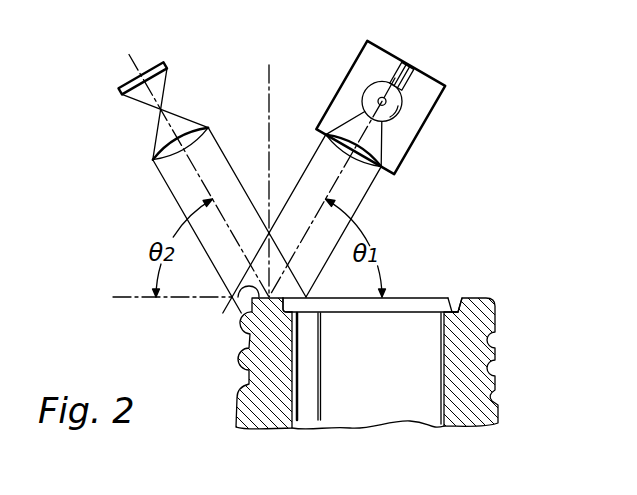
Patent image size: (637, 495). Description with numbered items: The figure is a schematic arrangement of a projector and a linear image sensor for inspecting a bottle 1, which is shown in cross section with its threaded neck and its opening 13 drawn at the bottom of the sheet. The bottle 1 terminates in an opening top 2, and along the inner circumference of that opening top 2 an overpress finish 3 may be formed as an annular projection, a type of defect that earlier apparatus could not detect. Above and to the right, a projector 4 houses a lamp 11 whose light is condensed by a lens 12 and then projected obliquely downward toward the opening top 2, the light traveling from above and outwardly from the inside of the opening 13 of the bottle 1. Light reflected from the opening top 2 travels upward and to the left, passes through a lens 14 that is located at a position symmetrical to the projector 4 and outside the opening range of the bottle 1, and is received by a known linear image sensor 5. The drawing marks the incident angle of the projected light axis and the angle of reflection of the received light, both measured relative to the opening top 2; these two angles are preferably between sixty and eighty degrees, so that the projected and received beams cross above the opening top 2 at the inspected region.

The bottle 1 is at (498, 409).
The opening top 2 is at (228, 313).
The overpress finish 3 is at (451, 300).
The projector 4 is at (413, 143).
The linear image sensor 5 is at (125, 96).
The lamp 11 is at (402, 108).
The lens 12 is at (360, 172).
The opening 13 is at (415, 297).
The lens 14 is at (158, 161).